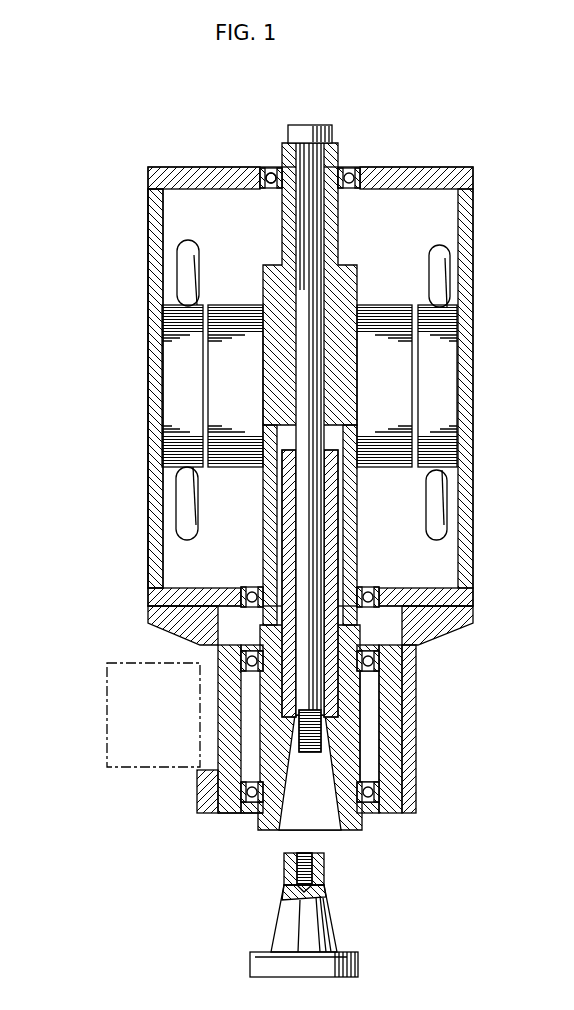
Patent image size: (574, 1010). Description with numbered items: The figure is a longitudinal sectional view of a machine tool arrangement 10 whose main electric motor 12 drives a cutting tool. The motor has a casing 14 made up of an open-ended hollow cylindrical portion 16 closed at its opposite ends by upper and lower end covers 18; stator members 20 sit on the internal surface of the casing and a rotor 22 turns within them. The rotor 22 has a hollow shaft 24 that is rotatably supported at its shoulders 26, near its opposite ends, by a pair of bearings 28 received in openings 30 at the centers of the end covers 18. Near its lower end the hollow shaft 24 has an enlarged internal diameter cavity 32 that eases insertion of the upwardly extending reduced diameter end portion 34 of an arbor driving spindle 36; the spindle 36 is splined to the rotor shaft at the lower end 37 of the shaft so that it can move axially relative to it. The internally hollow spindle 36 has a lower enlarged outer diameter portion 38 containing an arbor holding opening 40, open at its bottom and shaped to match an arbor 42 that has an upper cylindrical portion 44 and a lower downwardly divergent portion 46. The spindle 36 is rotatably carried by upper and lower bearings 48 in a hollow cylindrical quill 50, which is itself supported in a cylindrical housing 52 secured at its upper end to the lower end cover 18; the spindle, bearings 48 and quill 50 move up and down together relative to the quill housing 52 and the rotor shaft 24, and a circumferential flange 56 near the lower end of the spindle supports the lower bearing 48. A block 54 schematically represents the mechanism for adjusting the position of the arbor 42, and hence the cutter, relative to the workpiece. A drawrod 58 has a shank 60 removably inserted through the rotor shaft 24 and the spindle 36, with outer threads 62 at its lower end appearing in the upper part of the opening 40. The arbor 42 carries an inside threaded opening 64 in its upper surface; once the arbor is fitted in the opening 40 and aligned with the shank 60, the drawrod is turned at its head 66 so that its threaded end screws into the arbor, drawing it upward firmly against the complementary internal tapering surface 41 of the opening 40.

The machine tool arrangement 10 is at (143, 402).
The main electric motor 12 is at (162, 168).
The casing 14 is at (146, 272).
The hollow cylindrical portion 16 is at (150, 217).
The end cover 18 is at (424, 170).
The stator member 20 is at (175, 340).
The rotor 22 is at (386, 312).
The hollow shaft 24 is at (270, 292).
The shoulder 26 is at (352, 169).
The bearing 28 is at (271, 168).
The opening 30 is at (262, 170).
The enlarged internal diameter cavity 32 is at (280, 432).
The reduced diameter end portion 34 is at (336, 500).
The arbor driving spindle 36 is at (358, 752).
The lower end of the rotor shaft 37 is at (214, 624).
The lower enlarged outer diameter portion 38 is at (256, 694).
The arbor holding opening 40 is at (290, 826).
The internal tapering surface 41 is at (243, 815).
The arbor 42 is at (340, 938).
The upper cylindrical portion 44 is at (285, 870).
The lower downwardly divergent portion 46 is at (252, 955).
The bearing 48 is at (404, 672).
The hollow cylindrical quill 50 is at (384, 695).
The cylindrical housing 52 is at (200, 773).
The block 54 is at (103, 682).
The circumferential flange 56 is at (362, 821).
The drawrod 58 is at (306, 345).
The shank 60 is at (340, 428).
The outer threads 62 is at (308, 753).
The inside threaded opening 64 is at (320, 873).
The head 66 is at (316, 125).